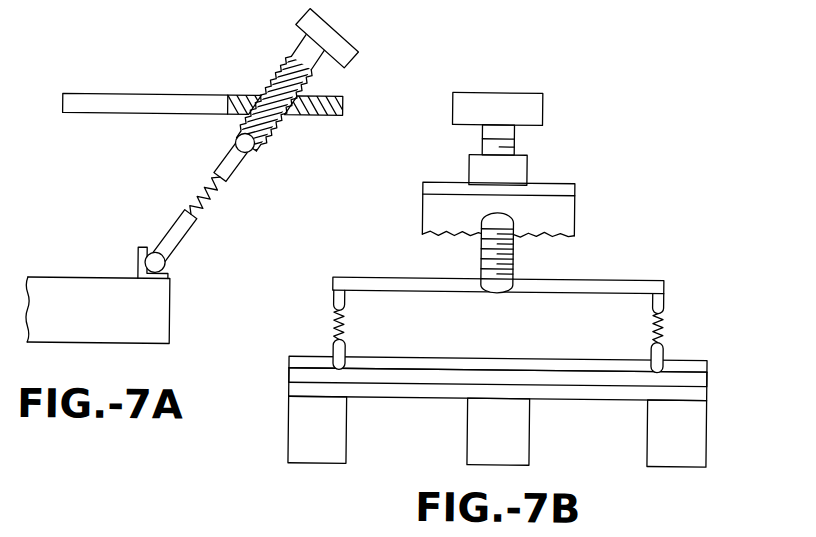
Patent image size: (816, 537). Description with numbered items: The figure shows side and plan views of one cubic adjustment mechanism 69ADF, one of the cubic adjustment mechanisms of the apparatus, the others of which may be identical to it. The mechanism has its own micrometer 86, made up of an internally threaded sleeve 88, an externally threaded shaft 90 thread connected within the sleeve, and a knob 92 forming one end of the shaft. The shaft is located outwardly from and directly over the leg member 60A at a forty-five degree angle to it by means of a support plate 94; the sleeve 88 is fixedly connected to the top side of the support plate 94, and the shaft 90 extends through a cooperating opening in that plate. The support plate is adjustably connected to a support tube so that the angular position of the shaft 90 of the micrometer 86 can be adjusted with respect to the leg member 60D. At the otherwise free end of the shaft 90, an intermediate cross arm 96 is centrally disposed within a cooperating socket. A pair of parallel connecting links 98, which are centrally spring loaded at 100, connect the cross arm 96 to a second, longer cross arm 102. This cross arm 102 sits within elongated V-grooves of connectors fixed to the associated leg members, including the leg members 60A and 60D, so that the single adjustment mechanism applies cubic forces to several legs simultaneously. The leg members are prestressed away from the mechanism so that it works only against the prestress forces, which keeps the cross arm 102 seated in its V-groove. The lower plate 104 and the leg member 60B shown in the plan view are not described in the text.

In FIG. 7A, the cubic adjustment mechanism 69ADF is at (209, 56).
In FIG. 7A, the micrometer 86 is at (293, 90).
In FIG. 7A, the internally threaded sleeve 88 is at (320, 83).
In FIG. 7B, the internally threaded sleeve 88 is at (523, 164).
In FIG. 7A, the externally threaded shaft 90 is at (245, 126).
In FIG. 7B, the externally threaded shaft 90 is at (616, 279).
In FIG. 7A, the knob 92 is at (348, 48).
In FIG. 7B, the knob 92 is at (540, 101).
In FIG. 7A, the support plate 94 is at (86, 103).
In FIG. 7B, the support plate 94 is at (567, 204).
In FIG. 7A, the intermediate cross arm 96 is at (249, 151).
In FIG. 7A, the connecting links 98 is at (166, 233).
In FIG. 7B, the connecting links 98 is at (333, 301).
In FIG. 7A, the spring loading 100 is at (202, 186).
In FIG. 7B, the spring loading 100 is at (332, 326).
In FIG. 7A, the second cross arm 102 is at (165, 262).
In FIG. 7B, the second cross arm 102 is at (497, 372).
In FIG. 7A, the bracket / base plate 104 is at (136, 259).
In FIG. 7B, the bracket / base plate 104 is at (385, 389).
In FIG. 7B, the leg member 60A is at (300, 440).
In FIG. 7B, the support leg 60B is at (702, 437).
In FIG. 7A, the leg member 60D is at (87, 288).
In FIG. 7B, the leg member 60D is at (531, 436).